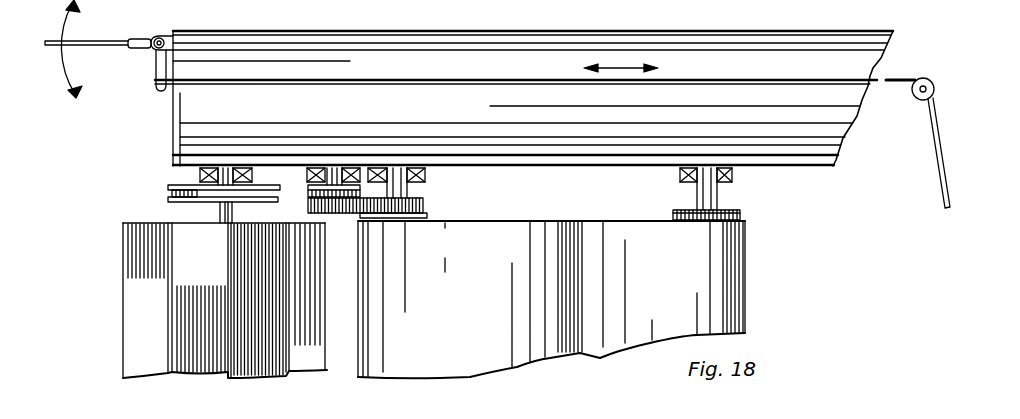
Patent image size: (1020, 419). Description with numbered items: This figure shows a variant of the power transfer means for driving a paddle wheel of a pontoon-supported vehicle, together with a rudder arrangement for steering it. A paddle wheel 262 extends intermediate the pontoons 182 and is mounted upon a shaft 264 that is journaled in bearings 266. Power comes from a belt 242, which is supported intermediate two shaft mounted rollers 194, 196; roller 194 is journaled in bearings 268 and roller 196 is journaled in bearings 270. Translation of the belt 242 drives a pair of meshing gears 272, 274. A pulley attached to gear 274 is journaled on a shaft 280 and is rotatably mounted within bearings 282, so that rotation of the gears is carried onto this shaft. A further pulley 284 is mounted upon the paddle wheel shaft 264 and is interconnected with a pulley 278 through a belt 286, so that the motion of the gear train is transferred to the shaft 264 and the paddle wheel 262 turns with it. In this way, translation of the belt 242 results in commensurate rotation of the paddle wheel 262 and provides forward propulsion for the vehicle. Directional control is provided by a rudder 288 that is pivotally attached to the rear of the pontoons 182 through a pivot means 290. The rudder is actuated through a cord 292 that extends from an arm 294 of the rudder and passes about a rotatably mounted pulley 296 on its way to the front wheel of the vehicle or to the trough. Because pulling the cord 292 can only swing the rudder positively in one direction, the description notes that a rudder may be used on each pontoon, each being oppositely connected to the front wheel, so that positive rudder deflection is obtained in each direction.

The pontoons 182 is at (422, 31).
The shaft mounted roller 194 is at (428, 217).
The shaft mounted roller 196 is at (737, 212).
The belt 242 is at (550, 232).
The paddle wheel 262 is at (123, 257).
The shaft 264 is at (233, 217).
The bearings 266 is at (200, 172).
The bearings 268 is at (422, 170).
The bearings 270 is at (730, 170).
The gear 272 is at (408, 208).
The gear 274 is at (342, 212).
The pulley 278 is at (282, 166).
The shaft 280 is at (331, 167).
The bearings 282 is at (312, 166).
The pulley 284 is at (188, 203).
The belt 286 is at (292, 193).
The rudder 288 is at (89, 41).
The pivot means 290 is at (157, 38).
The cord 292 is at (505, 79).
The arm 294 is at (154, 66).
The pulley 296 is at (925, 80).